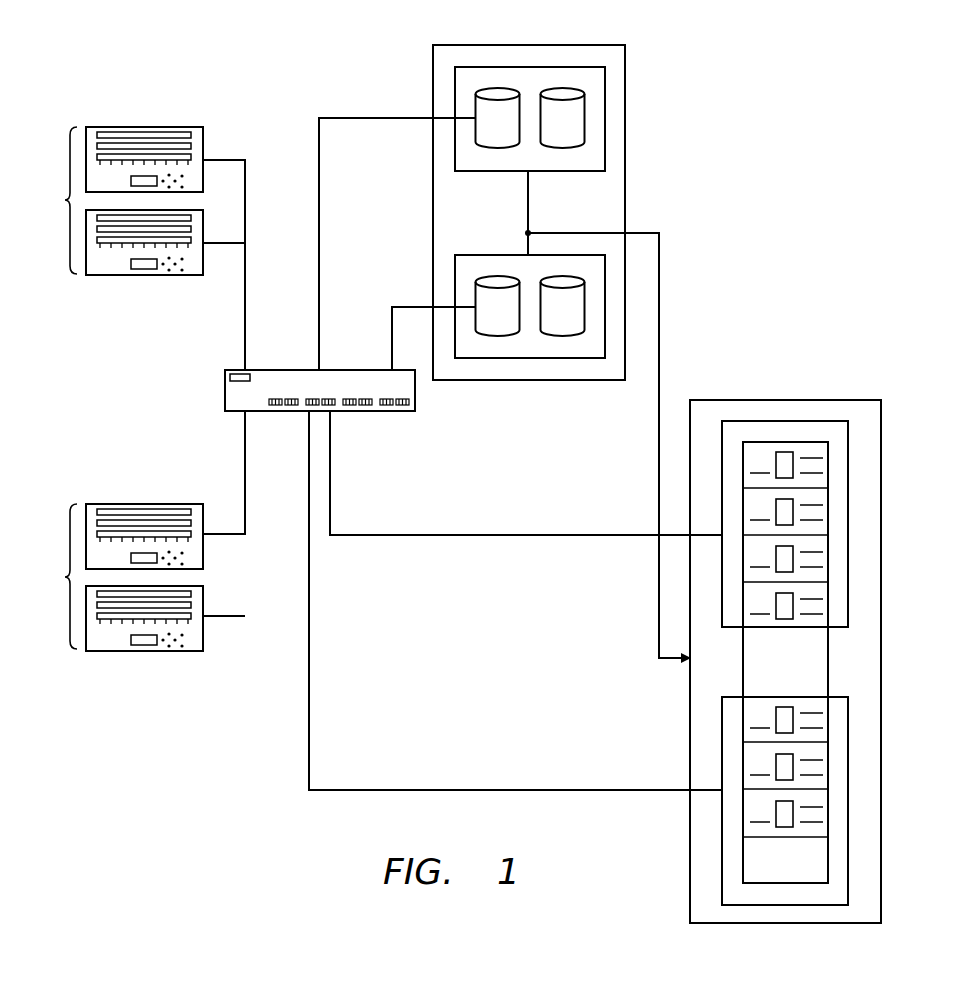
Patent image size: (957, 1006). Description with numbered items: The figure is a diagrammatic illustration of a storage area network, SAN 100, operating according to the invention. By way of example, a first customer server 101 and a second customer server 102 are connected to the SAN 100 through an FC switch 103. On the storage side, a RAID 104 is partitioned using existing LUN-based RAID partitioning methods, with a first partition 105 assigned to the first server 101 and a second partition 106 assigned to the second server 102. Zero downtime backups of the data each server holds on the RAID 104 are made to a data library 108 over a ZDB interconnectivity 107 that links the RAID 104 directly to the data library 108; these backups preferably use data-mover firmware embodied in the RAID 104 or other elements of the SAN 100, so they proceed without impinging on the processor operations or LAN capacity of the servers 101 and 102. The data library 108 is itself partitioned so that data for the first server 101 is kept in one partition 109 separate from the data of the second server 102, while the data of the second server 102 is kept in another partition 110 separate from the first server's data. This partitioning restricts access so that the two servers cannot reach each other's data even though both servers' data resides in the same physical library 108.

The SAN 100 is at (246, 32).
The first customer server 101 is at (112, 201).
The second customer server 102 is at (113, 577).
The FC switch 103 is at (407, 433).
The RAID 104 is at (651, 121).
The first partition 105 is at (583, 195).
The second partition 106 is at (497, 255).
The ZDB interconnectivity 107 is at (657, 607).
The data library 108 is at (843, 398).
The partition 109 is at (733, 697).
The partition 110 is at (853, 652).